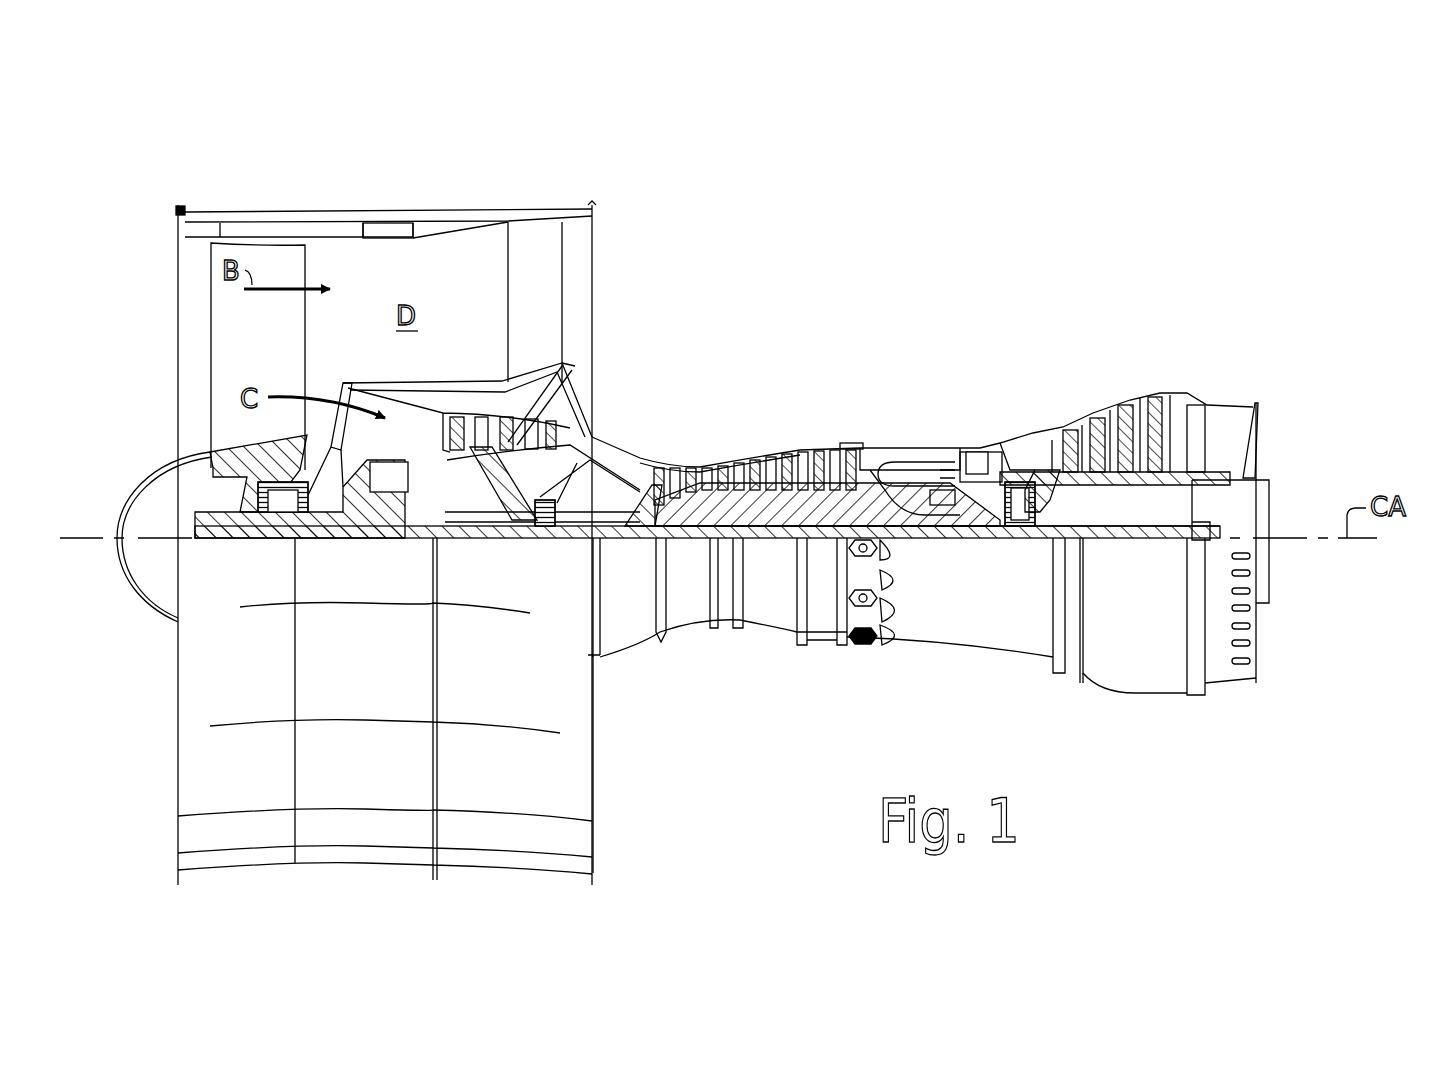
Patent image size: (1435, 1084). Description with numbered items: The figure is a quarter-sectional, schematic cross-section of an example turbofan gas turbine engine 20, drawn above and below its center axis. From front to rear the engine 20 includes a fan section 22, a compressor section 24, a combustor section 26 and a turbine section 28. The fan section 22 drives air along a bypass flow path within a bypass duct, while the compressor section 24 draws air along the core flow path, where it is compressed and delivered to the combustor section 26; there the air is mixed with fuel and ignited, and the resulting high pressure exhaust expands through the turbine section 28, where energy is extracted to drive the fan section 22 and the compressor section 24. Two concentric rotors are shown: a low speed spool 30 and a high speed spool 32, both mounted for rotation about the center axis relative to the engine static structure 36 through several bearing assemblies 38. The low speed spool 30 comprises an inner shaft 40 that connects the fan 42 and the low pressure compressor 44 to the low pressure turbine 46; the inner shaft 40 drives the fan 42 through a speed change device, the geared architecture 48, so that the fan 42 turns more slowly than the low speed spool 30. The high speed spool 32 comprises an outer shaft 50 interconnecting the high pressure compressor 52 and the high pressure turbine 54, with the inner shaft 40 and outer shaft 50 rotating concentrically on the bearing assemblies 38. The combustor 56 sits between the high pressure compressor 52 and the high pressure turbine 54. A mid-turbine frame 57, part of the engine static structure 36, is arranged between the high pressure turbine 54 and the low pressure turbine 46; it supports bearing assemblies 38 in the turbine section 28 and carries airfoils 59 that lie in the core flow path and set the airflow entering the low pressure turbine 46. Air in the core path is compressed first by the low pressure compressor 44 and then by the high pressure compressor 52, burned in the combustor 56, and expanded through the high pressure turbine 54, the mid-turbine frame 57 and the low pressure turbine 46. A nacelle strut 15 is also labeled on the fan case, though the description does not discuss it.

The fan nacelle strut 15 is at (385, 222).
The gas turbine engine 20 is at (1095, 222).
The fan section 22 is at (305, 185).
The compressor section 24 is at (645, 432).
The combustor section 26 is at (880, 425).
The turbine section 28 is at (1072, 388).
The low speed spool 30 is at (770, 555).
The high speed spool 32 is at (802, 507).
The engine static structure 36 is at (823, 652).
The bearing assemblies 38 is at (263, 540).
The inner shaft 40 is at (613, 540).
The fan 42 is at (266, 346).
The low pressure compressor 44 is at (507, 440).
The low pressure turbine 46 is at (1128, 425).
The geared architecture 48 is at (390, 540).
The outer shaft 50 is at (907, 513).
The high pressure compressor 52 is at (712, 470).
The high pressure turbine 54 is at (985, 447).
The combustor 56 is at (910, 477).
The mid-turbine frame 57 is at (1030, 427).
The airfoils 59 is at (1040, 470).